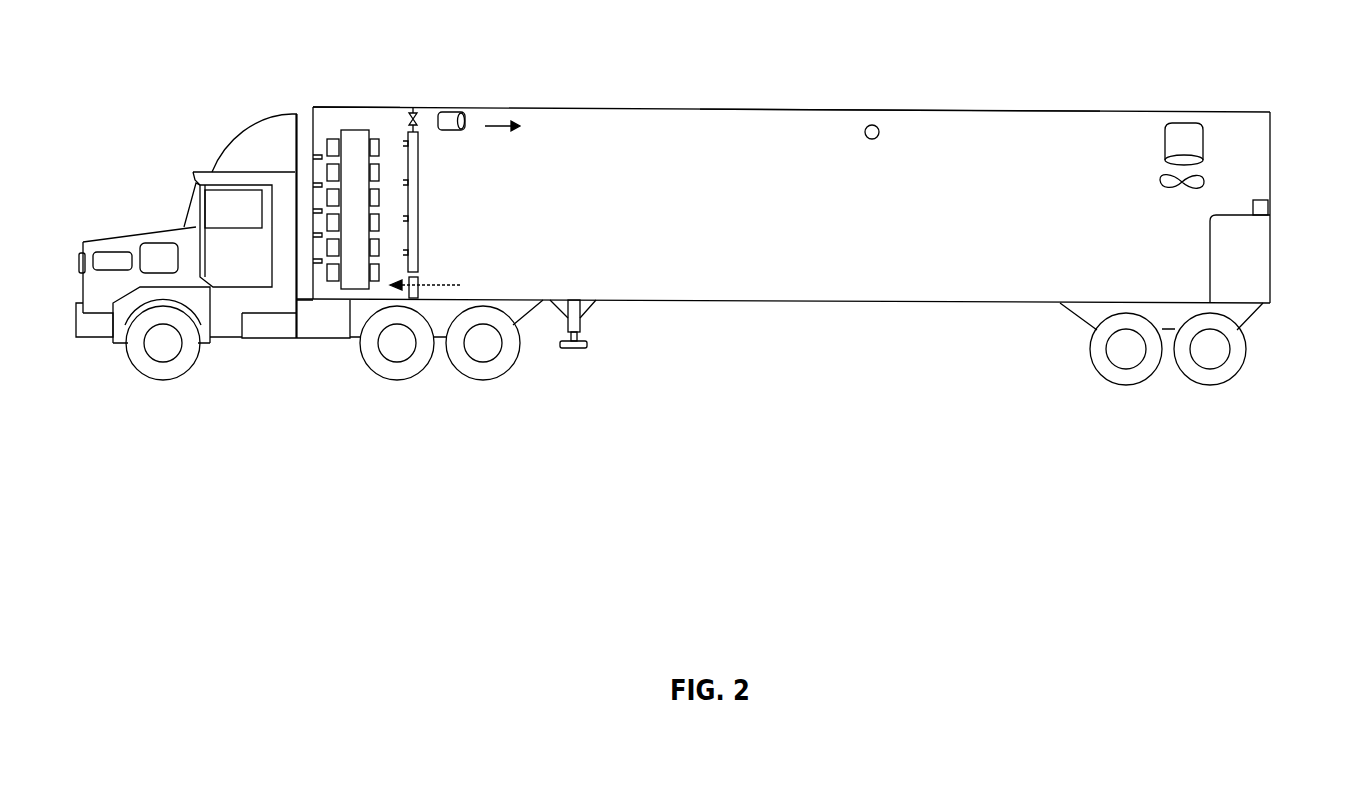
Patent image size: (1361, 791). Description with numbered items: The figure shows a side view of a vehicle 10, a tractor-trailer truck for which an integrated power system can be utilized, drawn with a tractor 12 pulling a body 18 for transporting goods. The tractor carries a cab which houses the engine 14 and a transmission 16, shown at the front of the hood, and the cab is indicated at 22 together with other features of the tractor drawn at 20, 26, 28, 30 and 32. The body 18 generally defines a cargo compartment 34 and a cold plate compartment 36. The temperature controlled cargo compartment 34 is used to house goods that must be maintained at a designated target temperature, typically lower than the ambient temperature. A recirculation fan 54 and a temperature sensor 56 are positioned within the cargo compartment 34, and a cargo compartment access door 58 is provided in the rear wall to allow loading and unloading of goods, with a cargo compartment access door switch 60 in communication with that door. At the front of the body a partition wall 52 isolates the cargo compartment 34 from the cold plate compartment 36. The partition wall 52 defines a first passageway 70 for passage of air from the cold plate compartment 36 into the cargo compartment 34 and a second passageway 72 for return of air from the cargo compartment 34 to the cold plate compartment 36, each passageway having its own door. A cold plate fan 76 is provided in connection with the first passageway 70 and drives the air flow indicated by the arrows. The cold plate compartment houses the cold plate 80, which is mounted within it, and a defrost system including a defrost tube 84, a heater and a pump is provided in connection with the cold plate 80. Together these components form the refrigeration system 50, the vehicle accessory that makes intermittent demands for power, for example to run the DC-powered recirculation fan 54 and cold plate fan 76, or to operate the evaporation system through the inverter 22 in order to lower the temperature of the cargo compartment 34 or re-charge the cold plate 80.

The vehicle 10 is at (932, 393).
The tractor 12 is at (175, 232).
The engine 14 is at (103, 257).
The transmission 16 is at (150, 248).
The body 18 is at (745, 110).
The cargo space 20 is at (1001, 208).
The inverter 22 is at (312, 120).
The top wall 26 is at (990, 110).
The bottom wall 28 is at (823, 303).
The rear unit 30 is at (1270, 270).
The trailer wheels 32 is at (1075, 316).
The cargo compartment 34 is at (815, 153).
The cold plate compartment 36 is at (358, 113).
The refrigeration system 50 is at (398, 195).
The partition wall 52 is at (413, 212).
The recirculation fan 54 is at (1183, 132).
The temperature sensor 56 is at (875, 125).
The cargo compartment access door 58 is at (1270, 160).
The cargo compartment access door switch 60 is at (1268, 205).
The first passageway 70 is at (416, 107).
The second passageway 72 is at (418, 272).
The cold plate fan 76 is at (453, 118).
The cold plate 80 is at (346, 210).
The defrost tube 84 is at (330, 197).